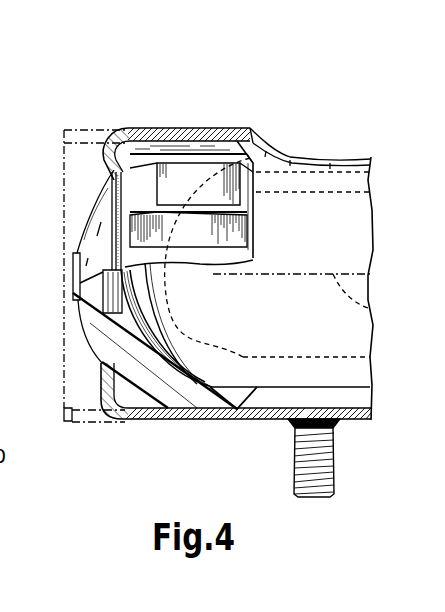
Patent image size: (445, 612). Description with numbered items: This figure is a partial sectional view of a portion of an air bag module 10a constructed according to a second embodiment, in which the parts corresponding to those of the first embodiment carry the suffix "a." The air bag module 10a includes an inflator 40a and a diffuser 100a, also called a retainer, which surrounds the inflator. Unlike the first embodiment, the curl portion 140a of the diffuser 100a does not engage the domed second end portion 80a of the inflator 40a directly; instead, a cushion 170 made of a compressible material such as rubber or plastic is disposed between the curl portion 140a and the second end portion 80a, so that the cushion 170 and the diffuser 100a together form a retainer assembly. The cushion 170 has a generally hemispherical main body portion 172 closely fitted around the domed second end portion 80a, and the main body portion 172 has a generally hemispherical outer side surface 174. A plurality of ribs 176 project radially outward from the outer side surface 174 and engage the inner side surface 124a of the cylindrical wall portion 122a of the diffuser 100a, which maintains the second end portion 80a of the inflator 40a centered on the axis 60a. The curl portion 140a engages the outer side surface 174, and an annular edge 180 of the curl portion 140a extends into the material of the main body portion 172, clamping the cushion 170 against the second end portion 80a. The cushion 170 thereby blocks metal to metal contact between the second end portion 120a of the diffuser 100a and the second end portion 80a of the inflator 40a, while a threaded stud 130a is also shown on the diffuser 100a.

The air bag module 10a is at (219, 114).
The inflator 40a is at (371, 208).
The axis 60a is at (370, 308).
The second end portion 80a is at (252, 309).
The diffuser 100a is at (280, 151).
The second end portion 120a is at (120, 422).
The cylindrical wall portion 122a is at (218, 422).
The inner side surface 124a is at (140, 138).
The threaded stud 130a is at (330, 467).
The curl portion 140a is at (101, 173).
The cushion 170 is at (90, 338).
The main body portion 172 is at (148, 380).
The outer side surface 174 is at (97, 205).
The ribs 176 is at (228, 150).
The annular edge 180 is at (120, 370).